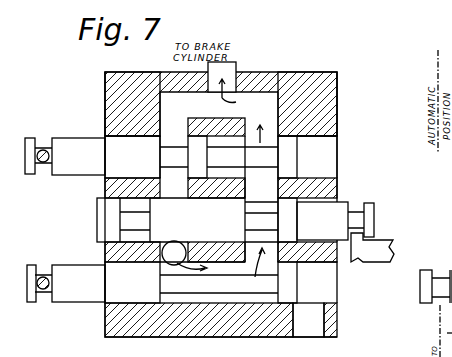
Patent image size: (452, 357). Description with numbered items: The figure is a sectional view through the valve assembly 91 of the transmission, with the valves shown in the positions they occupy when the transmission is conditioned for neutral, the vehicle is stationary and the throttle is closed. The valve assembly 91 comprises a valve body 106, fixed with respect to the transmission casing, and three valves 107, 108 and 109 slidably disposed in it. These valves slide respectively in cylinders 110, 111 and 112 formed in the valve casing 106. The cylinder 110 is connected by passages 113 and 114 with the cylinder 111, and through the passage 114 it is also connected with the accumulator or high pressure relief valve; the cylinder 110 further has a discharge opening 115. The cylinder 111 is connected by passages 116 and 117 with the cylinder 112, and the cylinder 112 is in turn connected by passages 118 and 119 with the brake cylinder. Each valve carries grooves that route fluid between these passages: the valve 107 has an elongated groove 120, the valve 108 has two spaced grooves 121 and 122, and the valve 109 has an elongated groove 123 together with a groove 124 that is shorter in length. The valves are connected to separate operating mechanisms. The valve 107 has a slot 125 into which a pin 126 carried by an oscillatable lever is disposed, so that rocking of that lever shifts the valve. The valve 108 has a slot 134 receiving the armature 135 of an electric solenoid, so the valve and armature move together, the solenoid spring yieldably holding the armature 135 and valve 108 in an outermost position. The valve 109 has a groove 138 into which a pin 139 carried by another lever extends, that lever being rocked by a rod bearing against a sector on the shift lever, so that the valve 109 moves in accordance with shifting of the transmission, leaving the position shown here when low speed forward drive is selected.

The valve assembly 91 is at (349, 101).
The valve body 106 is at (318, 80).
The valve 107 is at (76, 290).
The valve 108 is at (352, 220).
The valve 109 is at (77, 140).
The cylinder 110 is at (328, 262).
The cylinder 111 is at (340, 203).
The cylinder 112 is at (334, 134).
The passage 113 is at (253, 242).
The passage 114 is at (167, 265).
The discharge opening 115 is at (328, 320).
The passage 116 is at (253, 204).
The passage 117 is at (168, 186).
The passage 118 is at (276, 124).
The passage 119 is at (160, 128).
The elongated groove 120 is at (222, 300).
The groove 121 is at (128, 247).
The groove 122 is at (270, 229).
The elongated groove 123 is at (267, 156).
The groove 124 is at (163, 160).
The slot 125 is at (40, 262).
The pin 126 is at (44, 291).
The slot 134 is at (366, 206).
The armature 135 is at (393, 243).
The groove 138 is at (40, 135).
The pin 139 is at (44, 168).